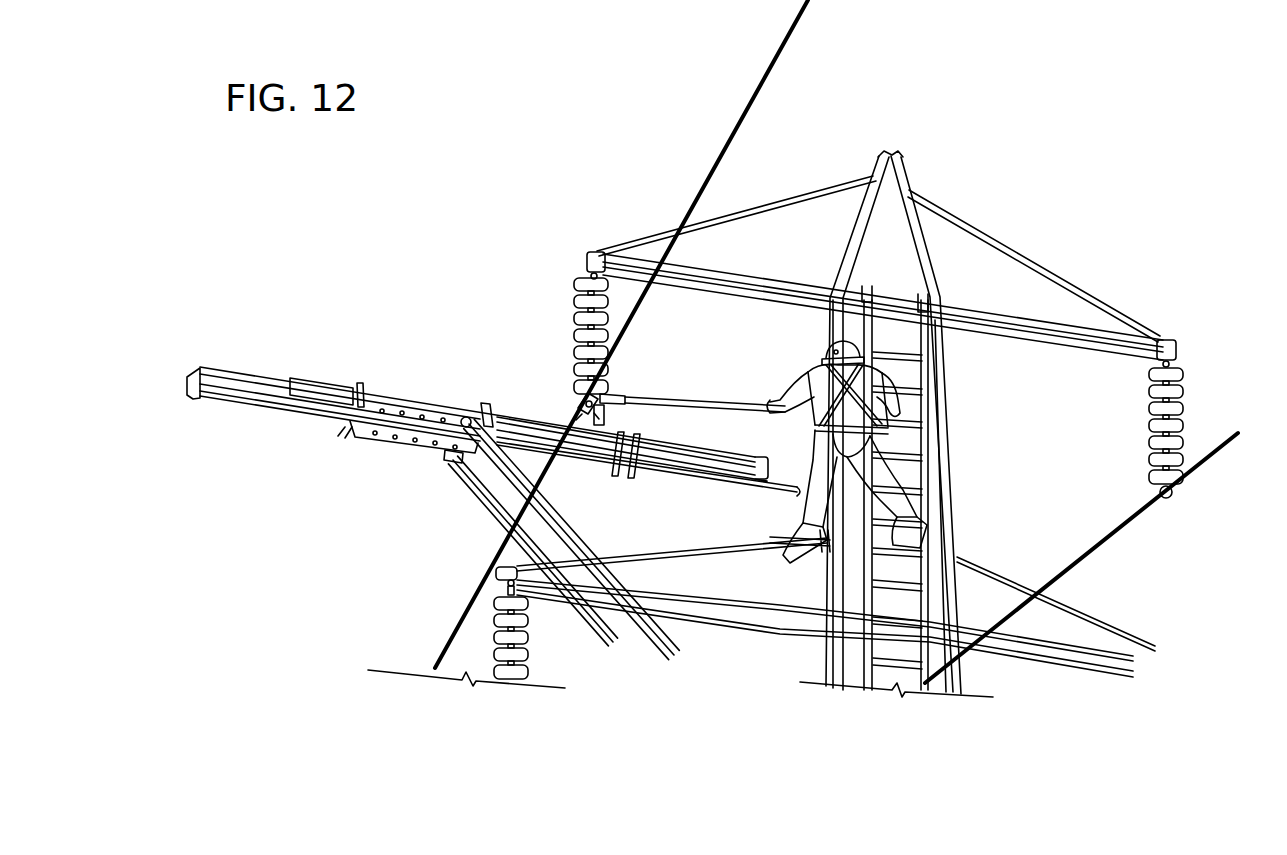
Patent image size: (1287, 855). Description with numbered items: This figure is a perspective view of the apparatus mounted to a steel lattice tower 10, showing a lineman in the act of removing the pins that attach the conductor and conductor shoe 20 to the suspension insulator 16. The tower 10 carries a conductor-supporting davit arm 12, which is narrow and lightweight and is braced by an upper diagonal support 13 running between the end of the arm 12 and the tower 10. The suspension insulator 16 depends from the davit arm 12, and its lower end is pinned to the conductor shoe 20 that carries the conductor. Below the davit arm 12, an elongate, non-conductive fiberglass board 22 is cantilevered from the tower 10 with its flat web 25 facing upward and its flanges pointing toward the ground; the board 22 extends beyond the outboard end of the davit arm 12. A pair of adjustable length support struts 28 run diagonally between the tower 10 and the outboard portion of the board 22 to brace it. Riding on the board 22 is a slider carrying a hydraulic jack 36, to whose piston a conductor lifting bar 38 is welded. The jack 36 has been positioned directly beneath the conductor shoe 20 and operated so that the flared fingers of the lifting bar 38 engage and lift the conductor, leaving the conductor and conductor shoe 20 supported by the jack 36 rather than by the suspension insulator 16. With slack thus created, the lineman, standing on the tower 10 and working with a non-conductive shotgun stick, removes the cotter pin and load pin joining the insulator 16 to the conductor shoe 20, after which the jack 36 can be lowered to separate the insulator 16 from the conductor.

The steel lattice tower 10 is at (612, 165).
The davit arm 12 is at (782, 271).
The upper diagonal support 13 is at (806, 193).
The suspension insulator 16 is at (574, 330).
The conductor shoe 20 is at (583, 400).
The board 22 is at (215, 366).
The board web 25 is at (687, 457).
The adjustable length support struts 28 is at (580, 535).
The hydraulic jack 36 is at (600, 424).
The conductor lifting bar 38 is at (575, 414).